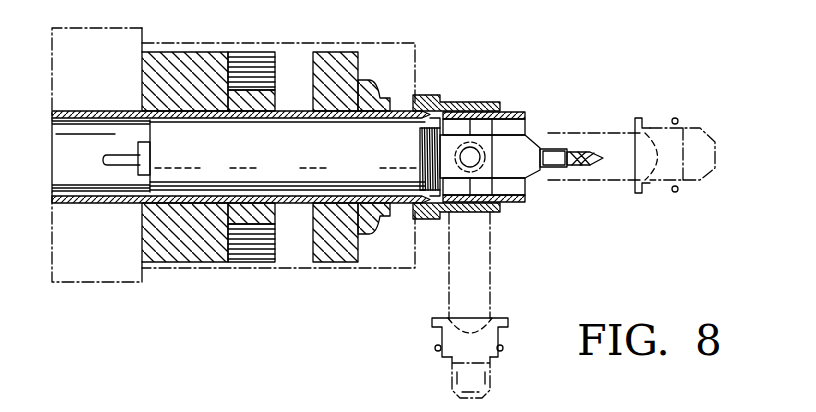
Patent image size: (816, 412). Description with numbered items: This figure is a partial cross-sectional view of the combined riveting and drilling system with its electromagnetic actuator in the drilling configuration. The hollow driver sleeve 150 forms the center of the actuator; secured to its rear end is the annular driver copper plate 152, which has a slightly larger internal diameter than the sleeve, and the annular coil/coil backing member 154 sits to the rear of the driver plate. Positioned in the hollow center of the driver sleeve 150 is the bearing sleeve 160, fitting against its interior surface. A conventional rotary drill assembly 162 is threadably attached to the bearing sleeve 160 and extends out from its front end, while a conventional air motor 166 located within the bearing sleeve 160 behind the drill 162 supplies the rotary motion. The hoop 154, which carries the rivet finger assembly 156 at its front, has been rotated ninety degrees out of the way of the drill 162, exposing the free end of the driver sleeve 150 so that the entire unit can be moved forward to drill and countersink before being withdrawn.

The driver sleeve 150 is at (458, 102).
The annular driver copper plate 152 is at (343, 52).
The hoop 154 is at (254, 52).
The rivet finger assembly 156 is at (698, 130).
The bearing sleeve 160 is at (212, 205).
The rotary drill assembly 162 is at (520, 148).
The air motor 166 is at (178, 186).